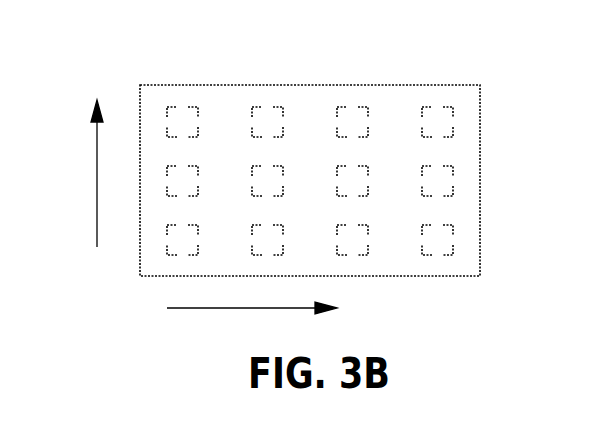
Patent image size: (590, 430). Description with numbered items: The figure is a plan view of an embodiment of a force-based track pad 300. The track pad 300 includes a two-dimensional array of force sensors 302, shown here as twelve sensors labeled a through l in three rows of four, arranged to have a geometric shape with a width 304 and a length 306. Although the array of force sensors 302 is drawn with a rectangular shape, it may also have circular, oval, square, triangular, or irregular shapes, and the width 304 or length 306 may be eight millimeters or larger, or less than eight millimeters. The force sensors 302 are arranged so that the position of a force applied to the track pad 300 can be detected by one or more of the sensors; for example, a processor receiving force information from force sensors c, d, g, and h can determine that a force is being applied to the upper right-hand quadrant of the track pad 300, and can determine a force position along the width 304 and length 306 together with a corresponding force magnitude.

The force-based track pad 300 is at (442, 295).
The force sensors 302 is at (450, 111).
The width 304 is at (95, 155).
The length 306 is at (277, 308).